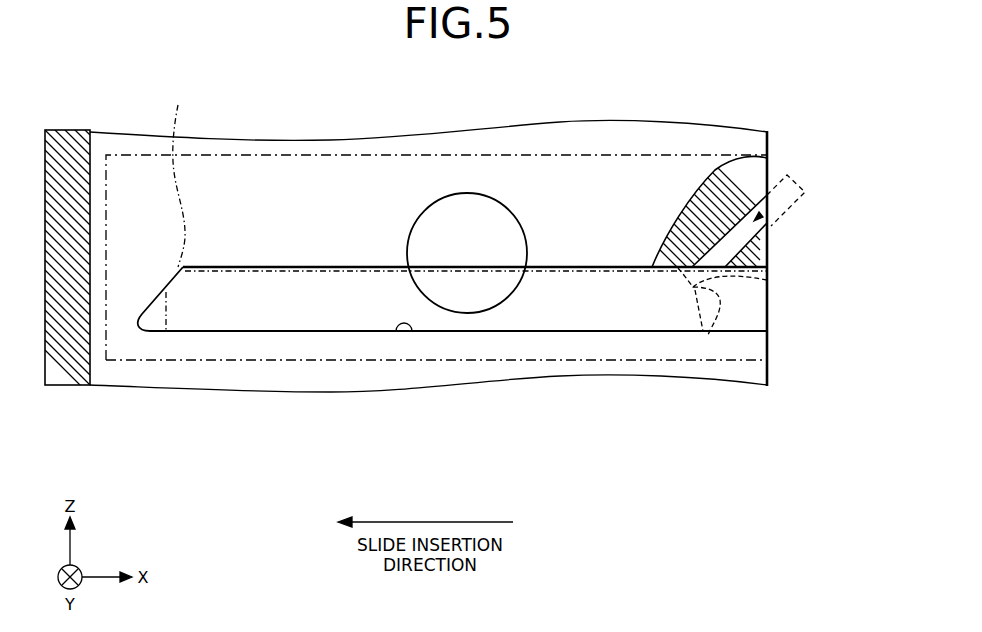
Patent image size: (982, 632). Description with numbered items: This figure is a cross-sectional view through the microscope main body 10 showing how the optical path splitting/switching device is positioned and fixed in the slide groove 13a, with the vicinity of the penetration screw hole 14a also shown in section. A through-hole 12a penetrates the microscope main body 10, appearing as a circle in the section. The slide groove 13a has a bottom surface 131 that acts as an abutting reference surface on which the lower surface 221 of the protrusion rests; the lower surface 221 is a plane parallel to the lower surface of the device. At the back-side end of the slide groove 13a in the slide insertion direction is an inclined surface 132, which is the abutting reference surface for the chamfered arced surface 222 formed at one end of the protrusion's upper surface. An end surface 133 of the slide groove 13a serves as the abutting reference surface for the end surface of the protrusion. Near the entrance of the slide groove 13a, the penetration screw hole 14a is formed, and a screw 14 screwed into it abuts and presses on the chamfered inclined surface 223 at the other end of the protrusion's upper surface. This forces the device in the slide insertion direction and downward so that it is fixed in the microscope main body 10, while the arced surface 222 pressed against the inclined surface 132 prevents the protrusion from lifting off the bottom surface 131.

The microscope main body 10 is at (757, 142).
The screw 14 is at (767, 280).
The penetration screw hole 14a is at (762, 216).
The slide groove 13a is at (752, 318).
The end surface 133 is at (307, 303).
The inclined surface 132 is at (153, 303).
The bottom surface 131 is at (393, 323).
The through-hole 12a is at (467, 314).
The arced surface 222 is at (465, 176).
The lower surface 221 is at (575, 317).
The inclined surface 223 is at (708, 335).